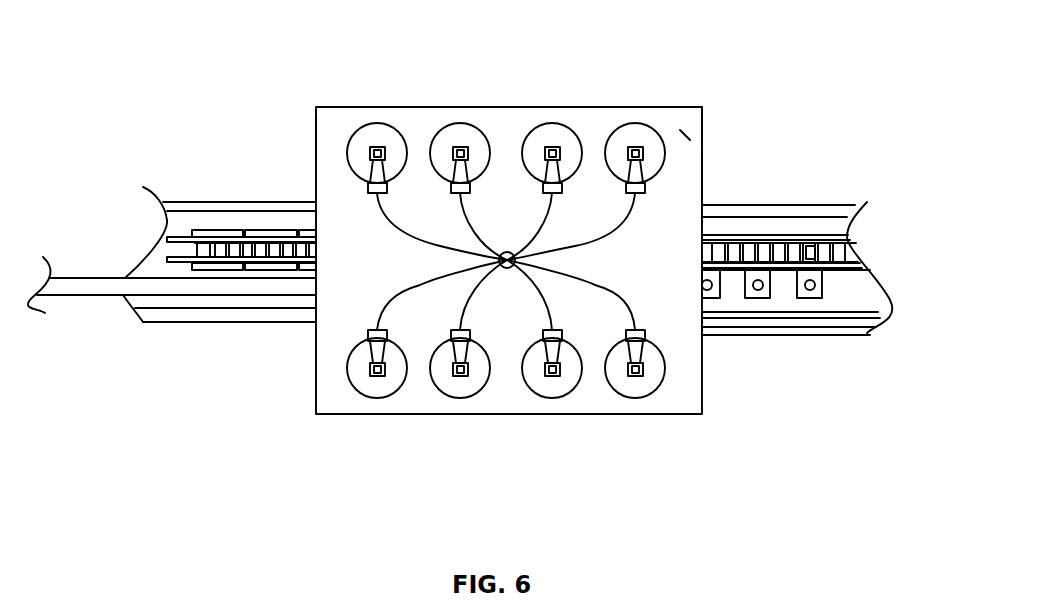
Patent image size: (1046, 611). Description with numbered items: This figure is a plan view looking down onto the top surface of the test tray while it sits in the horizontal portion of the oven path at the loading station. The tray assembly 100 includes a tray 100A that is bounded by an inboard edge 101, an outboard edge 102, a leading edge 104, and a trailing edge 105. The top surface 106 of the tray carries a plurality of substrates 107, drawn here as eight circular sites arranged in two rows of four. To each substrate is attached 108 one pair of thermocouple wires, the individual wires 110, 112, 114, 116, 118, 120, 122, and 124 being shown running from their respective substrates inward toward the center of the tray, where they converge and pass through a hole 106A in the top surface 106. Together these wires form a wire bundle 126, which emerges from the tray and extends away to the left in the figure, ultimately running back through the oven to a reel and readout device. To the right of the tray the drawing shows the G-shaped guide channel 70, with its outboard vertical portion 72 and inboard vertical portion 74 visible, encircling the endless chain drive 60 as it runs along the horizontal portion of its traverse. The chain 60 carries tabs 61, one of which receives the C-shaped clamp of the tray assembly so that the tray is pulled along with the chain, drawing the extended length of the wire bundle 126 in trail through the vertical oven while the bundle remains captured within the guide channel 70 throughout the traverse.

The tray assembly 100 is at (556, 77).
The tray 100A is at (703, 108).
The inboard edge 101 is at (415, 107).
The outboard edge 102 is at (552, 415).
The leading edge 104 is at (704, 163).
The trailing edge 105 is at (316, 133).
The top surface 106 is at (684, 135).
The hole 106A is at (507, 260).
The substrates 107 is at (358, 134).
The attachment 108 is at (367, 333).
The thermocouple wire 110 is at (410, 292).
The thermocouple wire 112 is at (460, 298).
The thermocouple wire 114 is at (550, 298).
The thermocouple wire 116 is at (607, 292).
The thermocouple wire 118 is at (408, 230).
The thermocouple wire 120 is at (457, 219).
The thermocouple wire 122 is at (560, 223).
The thermocouple wire 124 is at (607, 233).
The wire bundle 126 is at (112, 290).
The guide channel 70 is at (822, 133).
The outboard vertical portion 72 is at (862, 325).
The inboard vertical portion 74 is at (788, 205).
The endless chain drive 60 is at (812, 255).
The tab 61 is at (762, 294).